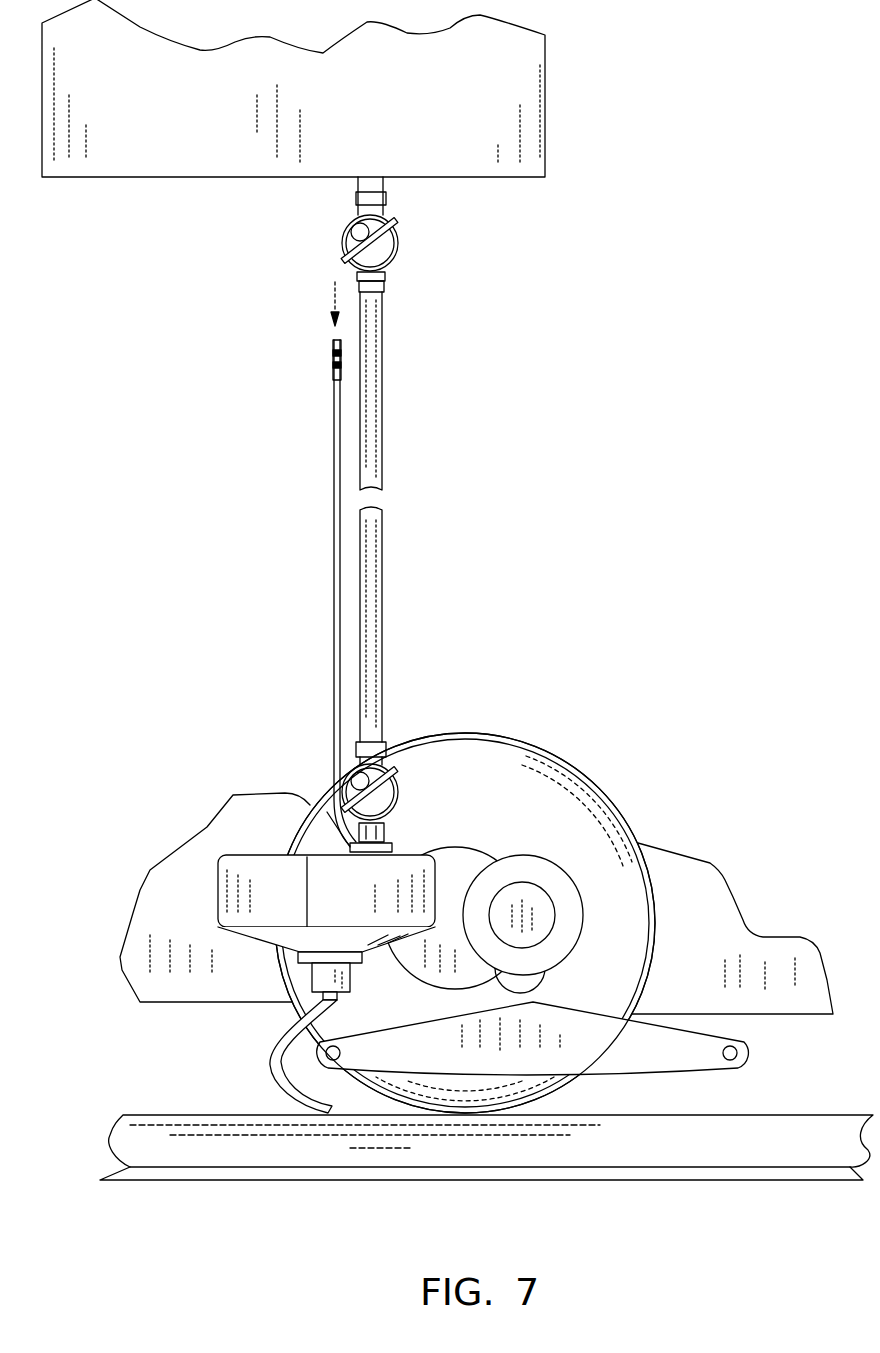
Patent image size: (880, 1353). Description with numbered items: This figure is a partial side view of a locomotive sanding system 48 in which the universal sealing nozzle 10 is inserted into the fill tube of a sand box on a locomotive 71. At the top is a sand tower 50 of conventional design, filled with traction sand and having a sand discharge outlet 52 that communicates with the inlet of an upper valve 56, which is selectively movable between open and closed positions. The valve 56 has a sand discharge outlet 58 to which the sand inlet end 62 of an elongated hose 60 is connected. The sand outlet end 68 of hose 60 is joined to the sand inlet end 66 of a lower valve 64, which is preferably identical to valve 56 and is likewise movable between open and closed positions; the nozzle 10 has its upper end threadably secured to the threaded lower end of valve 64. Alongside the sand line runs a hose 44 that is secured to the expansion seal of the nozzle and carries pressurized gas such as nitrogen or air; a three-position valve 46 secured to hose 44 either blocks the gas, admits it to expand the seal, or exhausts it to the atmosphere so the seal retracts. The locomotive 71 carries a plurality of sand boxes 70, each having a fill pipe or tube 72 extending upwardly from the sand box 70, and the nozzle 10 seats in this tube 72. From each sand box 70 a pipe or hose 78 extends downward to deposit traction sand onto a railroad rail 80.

The universal sealing nozzle 10 is at (400, 831).
The hose 44 is at (334, 508).
The valve 46 is at (322, 371).
The locomotive sanding system 48 is at (406, 565).
The sand tower 50 is at (587, 60).
The sand discharge outlet 52 is at (357, 195).
The valve 56 is at (406, 236).
The sand discharge outlet 58 is at (388, 276).
The elongated hose 60 is at (390, 386).
The sand inlet end 62 is at (380, 287).
The valve 64 is at (406, 775).
The sand inlet end 66 is at (383, 744).
The sand outlet end / threaded lower end 68 is at (368, 742).
The sand box 70 is at (220, 928).
The locomotive 71 is at (556, 745).
The fill pipe or tube 72 is at (392, 850).
The pipe or hose 78 is at (272, 1045).
The railroad rail 80 is at (153, 1113).